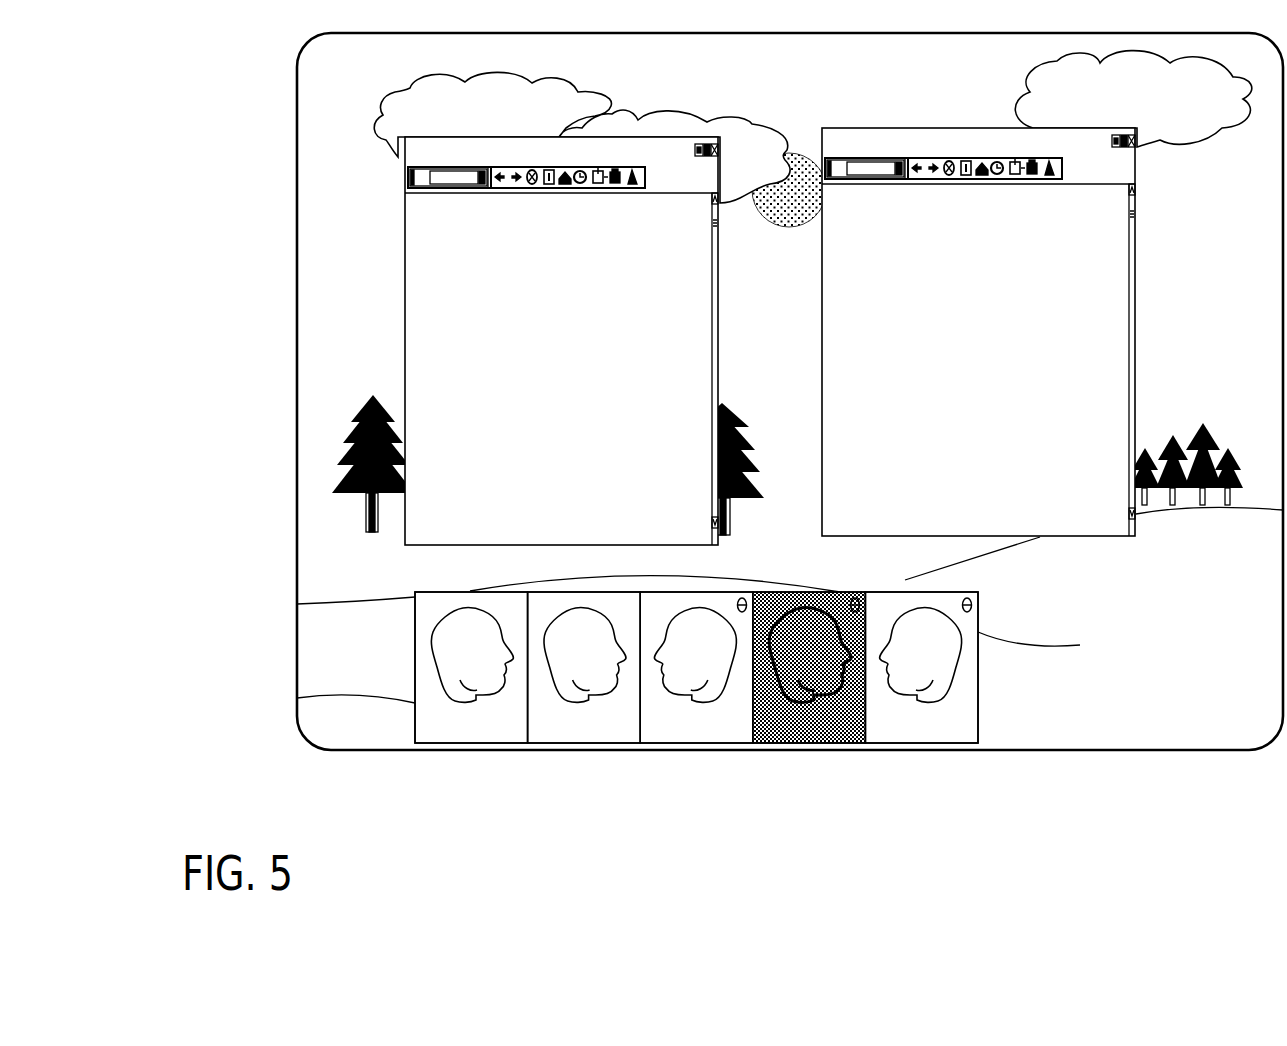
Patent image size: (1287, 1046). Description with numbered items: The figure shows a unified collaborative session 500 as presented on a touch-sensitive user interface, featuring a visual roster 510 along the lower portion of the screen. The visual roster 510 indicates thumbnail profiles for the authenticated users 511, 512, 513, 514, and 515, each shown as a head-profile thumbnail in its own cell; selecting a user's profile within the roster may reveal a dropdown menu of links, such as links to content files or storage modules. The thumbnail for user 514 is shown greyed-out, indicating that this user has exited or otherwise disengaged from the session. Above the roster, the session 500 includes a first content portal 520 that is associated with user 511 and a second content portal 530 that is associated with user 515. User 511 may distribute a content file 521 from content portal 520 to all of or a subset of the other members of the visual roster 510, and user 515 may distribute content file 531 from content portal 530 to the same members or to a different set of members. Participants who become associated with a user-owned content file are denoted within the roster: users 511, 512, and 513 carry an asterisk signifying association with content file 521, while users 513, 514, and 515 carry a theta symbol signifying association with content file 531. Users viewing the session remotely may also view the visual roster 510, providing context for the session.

The unified collaborative session 500 is at (1237, 738).
The visual roster 510 is at (732, 650).
The authenticated user 511 is at (454, 738).
The authenticated user 512 is at (567, 738).
The authenticated user 513 is at (679, 738).
The authenticated user 514 is at (792, 738).
The authenticated user 515 is at (904, 738).
The first content portal 520 is at (606, 315).
The content file 521 is at (693, 530).
The second content portal 530 is at (1025, 311).
The content file 531 is at (1108, 520).